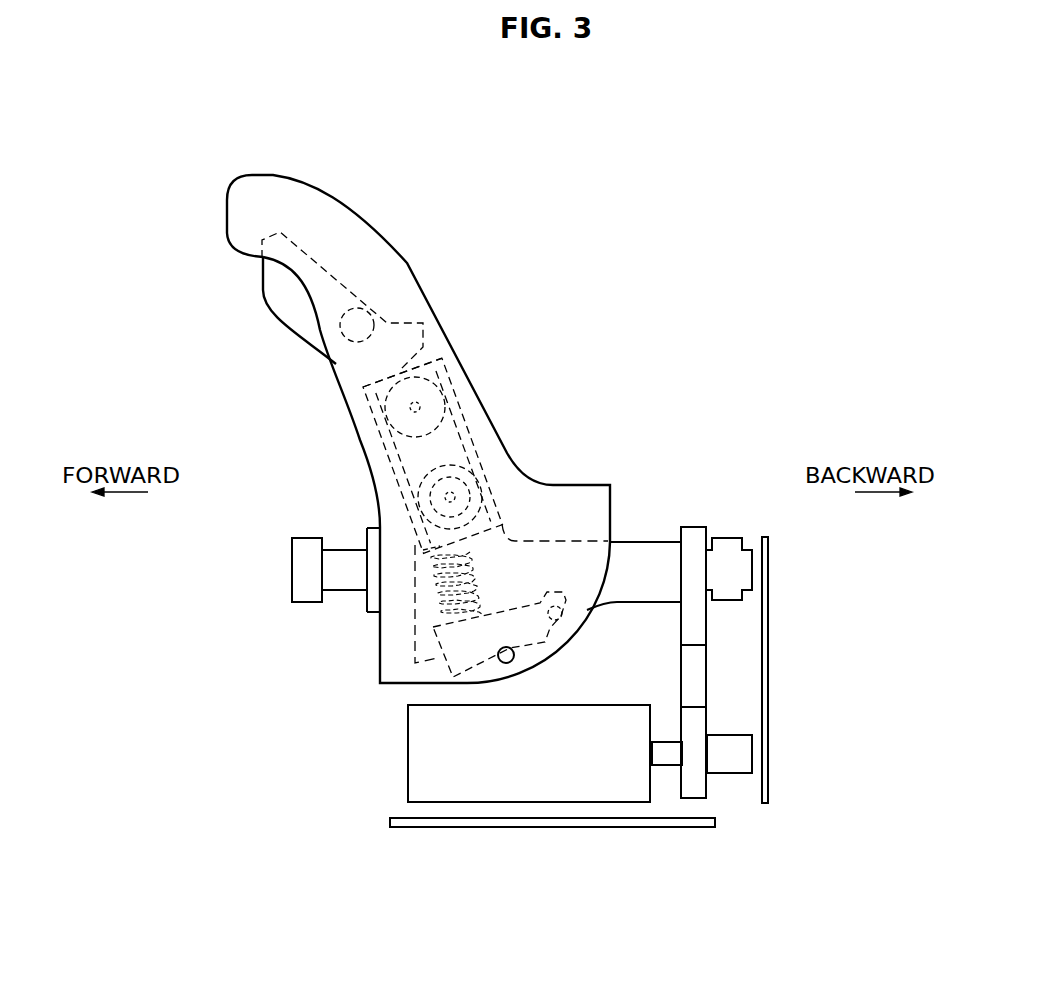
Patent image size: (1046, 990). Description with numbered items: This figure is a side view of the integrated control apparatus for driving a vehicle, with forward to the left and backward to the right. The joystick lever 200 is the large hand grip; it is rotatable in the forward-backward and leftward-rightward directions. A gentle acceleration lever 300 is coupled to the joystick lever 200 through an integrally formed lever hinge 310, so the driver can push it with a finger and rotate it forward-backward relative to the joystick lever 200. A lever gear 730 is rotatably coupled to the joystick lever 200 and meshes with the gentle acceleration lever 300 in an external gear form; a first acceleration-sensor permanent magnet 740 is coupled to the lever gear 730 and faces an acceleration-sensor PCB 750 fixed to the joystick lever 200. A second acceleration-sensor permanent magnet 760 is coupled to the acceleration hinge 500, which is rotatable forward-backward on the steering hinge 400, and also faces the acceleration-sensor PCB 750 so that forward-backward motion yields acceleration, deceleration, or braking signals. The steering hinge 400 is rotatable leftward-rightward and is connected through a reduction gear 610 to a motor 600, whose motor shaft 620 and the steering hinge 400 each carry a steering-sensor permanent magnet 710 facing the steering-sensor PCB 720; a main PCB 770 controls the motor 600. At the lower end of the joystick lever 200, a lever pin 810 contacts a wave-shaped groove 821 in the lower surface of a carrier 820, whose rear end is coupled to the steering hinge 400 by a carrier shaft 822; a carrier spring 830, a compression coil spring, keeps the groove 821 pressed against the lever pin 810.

The joystick lever 200 is at (323, 190).
The gentle acceleration lever 300 is at (283, 298).
The lever hinge 310 is at (357, 325).
The steering hinge 400 is at (643, 553).
The acceleration hinge 500 is at (417, 490).
The motor 600 is at (577, 787).
The reduction gear 610 is at (693, 728).
The motor shaft 620 is at (665, 767).
The steering-sensor permanent magnets 710 is at (752, 570).
The steering-sensor printed circuit board 720 is at (768, 630).
The lever gear 730 is at (418, 388).
The first acceleration-sensor permanent magnet 740 is at (415, 407).
The acceleration-sensor PCB 750 is at (407, 463).
The second acceleration-sensor permanent magnet 760 is at (450, 497).
The main PCB 770 is at (420, 823).
The lever pin 810 is at (506, 663).
The carrier 820 is at (447, 637).
The groove 821 is at (480, 663).
The carrier shaft 822 is at (560, 618).
The carrier spring 830 is at (440, 610).